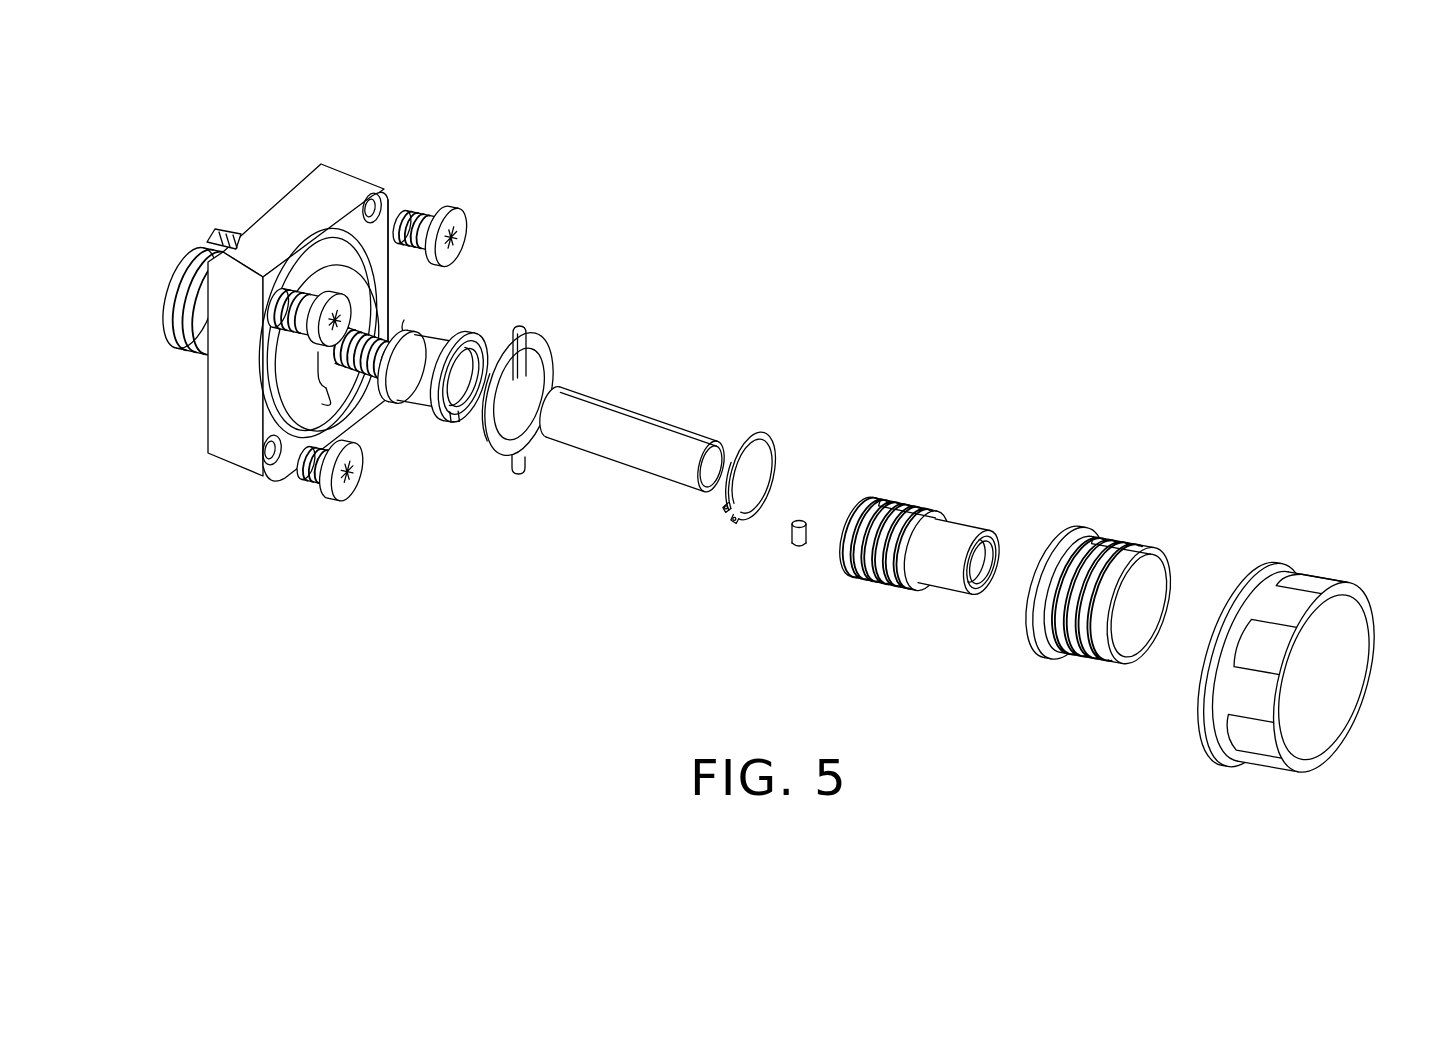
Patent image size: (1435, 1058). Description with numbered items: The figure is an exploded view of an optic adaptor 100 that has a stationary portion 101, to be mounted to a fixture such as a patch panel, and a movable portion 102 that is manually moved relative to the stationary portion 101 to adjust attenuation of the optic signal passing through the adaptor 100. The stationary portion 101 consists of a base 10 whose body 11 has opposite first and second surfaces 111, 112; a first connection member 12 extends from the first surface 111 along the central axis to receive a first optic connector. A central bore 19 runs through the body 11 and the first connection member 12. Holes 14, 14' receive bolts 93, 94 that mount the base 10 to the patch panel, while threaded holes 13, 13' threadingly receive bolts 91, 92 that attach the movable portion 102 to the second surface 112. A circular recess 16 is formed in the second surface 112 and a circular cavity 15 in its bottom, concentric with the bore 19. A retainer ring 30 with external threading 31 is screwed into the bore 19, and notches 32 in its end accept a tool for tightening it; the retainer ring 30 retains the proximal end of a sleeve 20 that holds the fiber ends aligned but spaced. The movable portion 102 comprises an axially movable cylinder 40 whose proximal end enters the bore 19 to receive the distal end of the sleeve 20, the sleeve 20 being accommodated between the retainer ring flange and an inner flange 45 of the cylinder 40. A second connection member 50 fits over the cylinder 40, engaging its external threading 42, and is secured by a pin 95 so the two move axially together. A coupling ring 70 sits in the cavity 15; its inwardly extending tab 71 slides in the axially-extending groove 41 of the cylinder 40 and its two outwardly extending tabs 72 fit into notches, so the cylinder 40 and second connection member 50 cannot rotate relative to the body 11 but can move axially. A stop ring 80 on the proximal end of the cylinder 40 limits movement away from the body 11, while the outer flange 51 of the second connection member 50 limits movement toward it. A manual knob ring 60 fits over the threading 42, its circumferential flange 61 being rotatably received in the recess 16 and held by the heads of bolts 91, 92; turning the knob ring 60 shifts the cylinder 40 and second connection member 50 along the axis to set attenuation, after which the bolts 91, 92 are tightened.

The base 10 is at (238, 152).
The body 11 is at (362, 290).
The first surface 111 is at (290, 190).
The second surface 112 is at (395, 222).
The first connection member 12 is at (200, 250).
The threaded hole 13 is at (420, 174).
The threaded hole 13' is at (224, 482).
The hole 14 is at (179, 300).
The hole 14' is at (416, 299).
The circular cavity 15 is at (320, 368).
The circular recess 16 is at (325, 395).
The central bore 19 is at (300, 405).
The sleeve 20 is at (640, 435).
The retainer ring 30 is at (452, 408).
The external threading 31 is at (466, 330).
The notches 32 is at (460, 424).
The axially movable cylinder 40 is at (936, 545).
The axially-extending groove 41 is at (893, 572).
The external threading 42 is at (912, 492).
The inner flange 45 is at (985, 592).
The second connection member 50 is at (1097, 603).
The outer flange 51 is at (1077, 528).
The manual knob ring 60 is at (1300, 631).
The circumferential flange 61 is at (1274, 557).
The coupling ring 70 is at (545, 407).
The inwardly extending tab 71 is at (528, 352).
The outwardly extending tabs 72 is at (521, 470).
The stop ring 80 is at (773, 433).
The bolt 91 is at (432, 229).
The bolt 92 is at (322, 492).
The bolt 93 is at (312, 346).
The bolt 94 is at (415, 332).
The pin 95 is at (797, 553).
The optic adaptor 100 is at (913, 263).
The stationary portion 101 is at (693, 644).
The movable portion 102 is at (1247, 810).